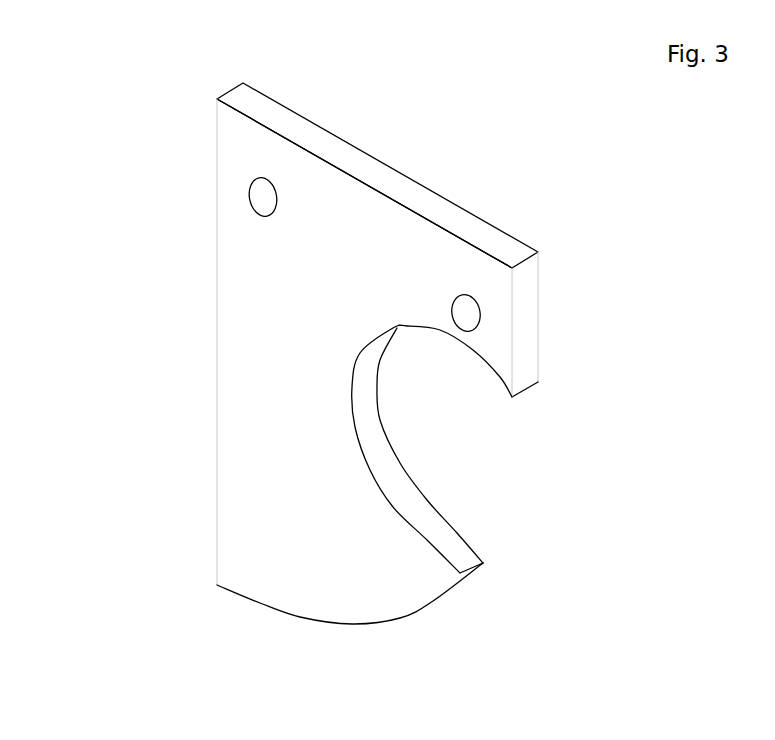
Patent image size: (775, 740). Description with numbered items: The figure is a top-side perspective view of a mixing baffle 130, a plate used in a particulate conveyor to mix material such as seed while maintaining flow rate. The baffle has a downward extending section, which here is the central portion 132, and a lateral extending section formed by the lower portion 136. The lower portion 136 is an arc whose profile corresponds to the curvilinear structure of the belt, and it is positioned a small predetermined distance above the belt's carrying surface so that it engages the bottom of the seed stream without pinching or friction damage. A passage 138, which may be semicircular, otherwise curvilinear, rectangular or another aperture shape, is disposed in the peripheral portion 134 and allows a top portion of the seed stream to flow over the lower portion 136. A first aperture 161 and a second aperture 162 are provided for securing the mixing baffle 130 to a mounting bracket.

The mixing baffle 130 is at (150, 100).
The central portion 132 is at (218, 373).
The peripheral portion 134 is at (538, 355).
The lower portion 136 is at (350, 623).
The passage 138 is at (445, 443).
The first aperture 161 is at (280, 207).
The second aperture 162 is at (452, 306).